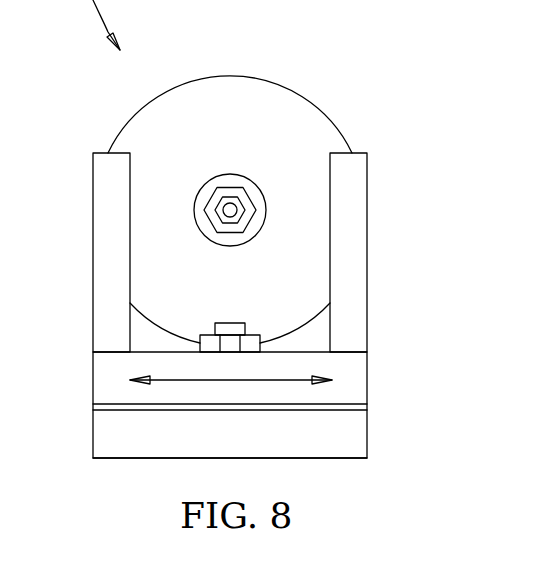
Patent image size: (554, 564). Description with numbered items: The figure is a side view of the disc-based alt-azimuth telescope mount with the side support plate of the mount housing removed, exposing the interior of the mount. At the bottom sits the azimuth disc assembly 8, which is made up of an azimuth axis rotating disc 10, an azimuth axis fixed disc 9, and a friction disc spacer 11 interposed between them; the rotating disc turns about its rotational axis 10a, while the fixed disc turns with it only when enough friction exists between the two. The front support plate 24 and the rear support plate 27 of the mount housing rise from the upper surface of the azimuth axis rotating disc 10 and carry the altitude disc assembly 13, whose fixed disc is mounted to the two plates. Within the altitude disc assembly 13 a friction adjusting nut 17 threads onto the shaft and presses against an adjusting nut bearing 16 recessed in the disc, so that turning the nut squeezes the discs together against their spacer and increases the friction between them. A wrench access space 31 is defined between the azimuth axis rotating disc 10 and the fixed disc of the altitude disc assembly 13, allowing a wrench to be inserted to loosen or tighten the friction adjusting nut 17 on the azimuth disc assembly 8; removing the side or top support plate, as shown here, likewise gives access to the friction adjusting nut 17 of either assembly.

The azimuth disc assembly 8 is at (68, 350).
The azimuth axis fixed disc 9 is at (355, 448).
The azimuth axis rotating disc 10 is at (367, 383).
The rotational axis 10a is at (178, 383).
The friction disc spacer 11 is at (367, 412).
The altitude disc assembly 13 is at (192, 77).
The adjusting nut bearing 16 is at (259, 200).
The friction adjusting nut 17 is at (244, 197).
The front support plate 24 is at (357, 205).
The rear support plate 27 is at (100, 191).
The wrench access space 31 is at (155, 347).